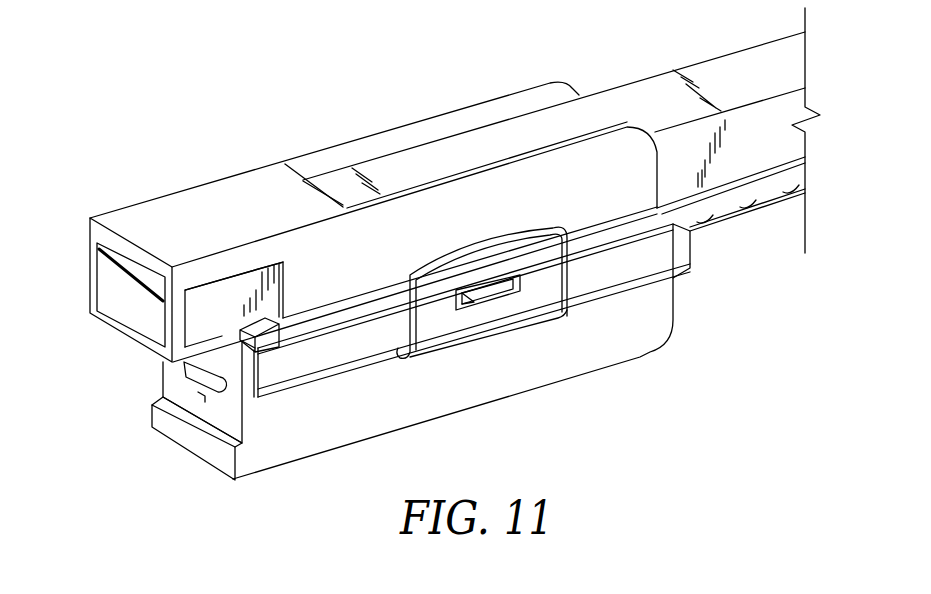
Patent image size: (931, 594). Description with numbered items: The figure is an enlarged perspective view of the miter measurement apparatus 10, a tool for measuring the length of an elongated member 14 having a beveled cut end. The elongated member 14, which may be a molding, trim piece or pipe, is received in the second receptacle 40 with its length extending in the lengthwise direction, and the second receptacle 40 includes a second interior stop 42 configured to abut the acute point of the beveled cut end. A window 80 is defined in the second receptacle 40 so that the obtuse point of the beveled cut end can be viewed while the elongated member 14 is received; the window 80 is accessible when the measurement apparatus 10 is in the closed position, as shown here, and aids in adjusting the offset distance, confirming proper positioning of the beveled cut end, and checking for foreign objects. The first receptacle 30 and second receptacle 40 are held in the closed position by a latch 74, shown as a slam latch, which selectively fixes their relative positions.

The miter measurement apparatus 10 is at (108, 170).
The elongated member 14 is at (230, 300).
The first receptacle 30 is at (597, 372).
The second receptacle 40 is at (440, 112).
The second interior stop 42 is at (214, 298).
The latch 74 is at (508, 303).
The window 80 is at (248, 262).